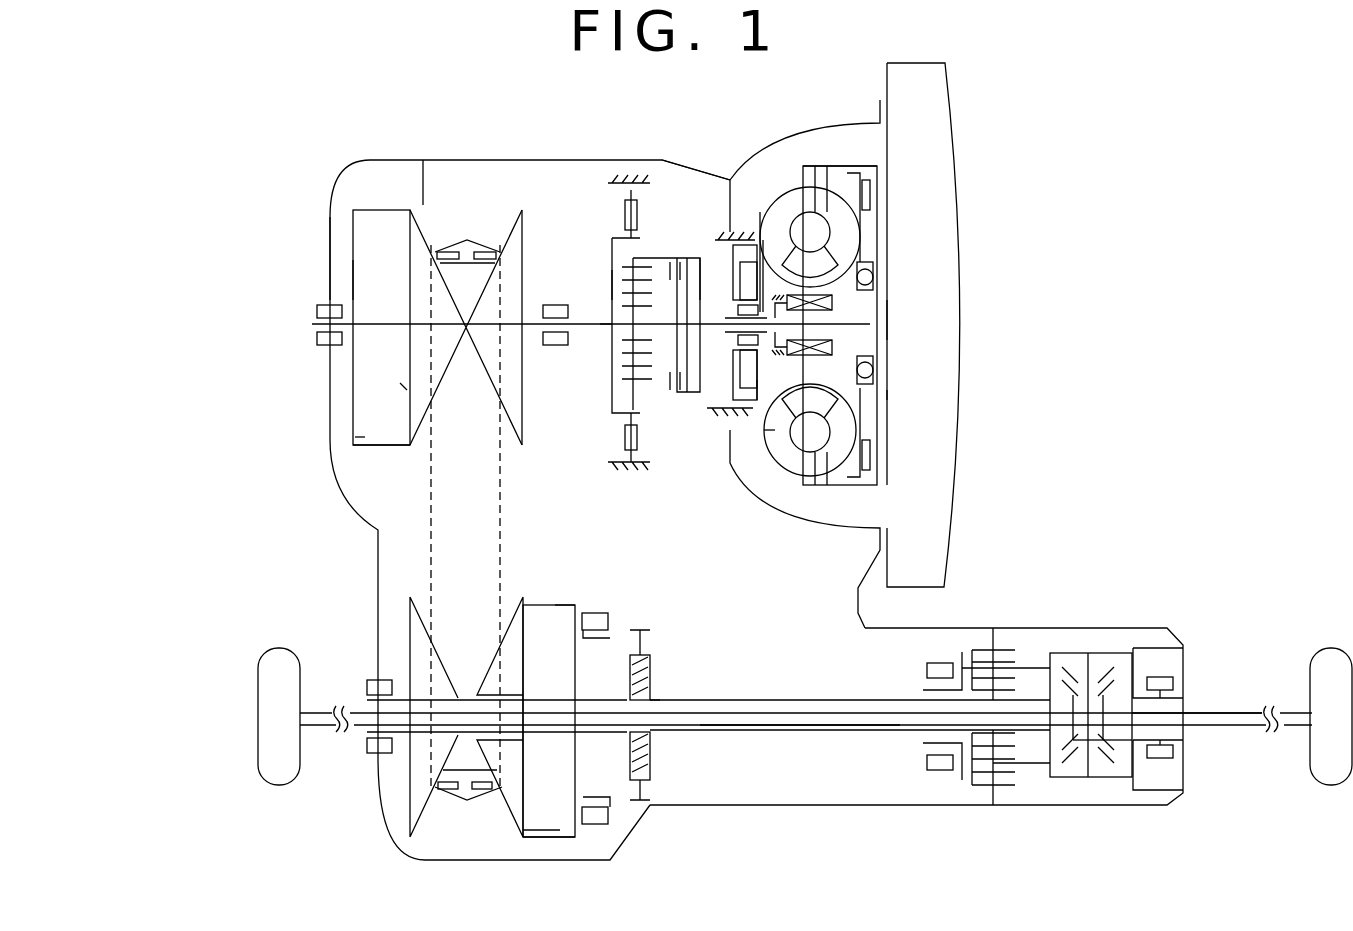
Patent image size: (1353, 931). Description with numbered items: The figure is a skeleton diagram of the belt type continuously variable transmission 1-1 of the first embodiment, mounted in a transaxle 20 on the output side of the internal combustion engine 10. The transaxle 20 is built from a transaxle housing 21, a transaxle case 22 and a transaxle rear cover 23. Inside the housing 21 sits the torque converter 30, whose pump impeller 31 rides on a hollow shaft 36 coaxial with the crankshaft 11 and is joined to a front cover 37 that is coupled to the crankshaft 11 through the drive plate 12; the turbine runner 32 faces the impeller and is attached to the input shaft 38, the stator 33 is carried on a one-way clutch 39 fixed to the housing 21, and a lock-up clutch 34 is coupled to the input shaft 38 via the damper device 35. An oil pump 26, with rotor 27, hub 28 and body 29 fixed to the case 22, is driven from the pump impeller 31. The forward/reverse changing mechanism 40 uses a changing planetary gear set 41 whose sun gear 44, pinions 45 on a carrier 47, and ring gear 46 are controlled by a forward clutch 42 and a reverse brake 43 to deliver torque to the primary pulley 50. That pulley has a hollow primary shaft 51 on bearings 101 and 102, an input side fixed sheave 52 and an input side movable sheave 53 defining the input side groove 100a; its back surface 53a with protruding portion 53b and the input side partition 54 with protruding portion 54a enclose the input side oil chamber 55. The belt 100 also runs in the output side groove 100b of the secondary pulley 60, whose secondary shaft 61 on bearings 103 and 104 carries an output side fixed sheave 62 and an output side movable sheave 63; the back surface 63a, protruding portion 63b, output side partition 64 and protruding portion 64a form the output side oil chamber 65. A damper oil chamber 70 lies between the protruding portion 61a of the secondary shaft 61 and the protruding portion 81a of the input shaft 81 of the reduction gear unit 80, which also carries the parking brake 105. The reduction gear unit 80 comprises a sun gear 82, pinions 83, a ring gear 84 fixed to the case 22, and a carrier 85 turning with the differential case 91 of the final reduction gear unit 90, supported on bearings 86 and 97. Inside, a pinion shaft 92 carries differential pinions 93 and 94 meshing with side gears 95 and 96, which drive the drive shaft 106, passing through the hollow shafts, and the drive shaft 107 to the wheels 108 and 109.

The internal combustion engine 10 is at (959, 86).
The crankshaft 11 is at (920, 322).
The drive plate 12 is at (880, 396).
The transaxle 20 is at (495, 137).
The transaxle housing 21 is at (812, 125).
The transaxle case 22 is at (680, 160).
The transaxle rear cover 23 is at (330, 230).
The oil pump 26 is at (741, 206).
The rotor 27 is at (726, 382).
The hub 28 is at (810, 226).
The body 29 is at (715, 432).
The torque converter 30 is at (831, 292).
The pump impeller 31 is at (772, 436).
The turbine runner 32 is at (838, 200).
The stator 33 is at (810, 434).
The lock-up clutch 34 is at (883, 452).
The damper device 35 is at (876, 247).
The hollow shaft 36 is at (745, 340).
The front cover 37 is at (855, 168).
The input shaft 38 is at (722, 310).
The one-way clutch 39 is at (845, 351).
The forward/reverse changing mechanism 40 is at (627, 342).
The changing planetary gear set 41 is at (598, 253).
The forward clutch 42 is at (702, 250).
The reverse brake 43 is at (640, 220).
The sun gear 44 is at (662, 382).
The pinions 45 is at (648, 290).
The ring gear 46 is at (612, 392).
The carrier 47 is at (612, 280).
The primary pulley 50 is at (393, 475).
The primary shaft 51 is at (583, 335).
The input side fixed sheave 52 is at (527, 240).
The input side movable sheave 53 is at (435, 368).
The back surface 53a is at (400, 388).
The protruding portion 53b is at (380, 447).
The input side partition 54 is at (353, 262).
The protruding portion 54a is at (355, 436).
The input side oil chamber 55 is at (372, 210).
The secondary pulley 60 is at (488, 718).
The secondary shaft 61 is at (470, 700).
The protruding portion 61a is at (632, 675).
The output side fixed sheave 62 is at (378, 628).
The output side movable sheave 63 is at (510, 633).
The back surface 63a is at (540, 603).
The protruding portion 63b is at (545, 838).
The output side partition 64 is at (598, 613).
The protruding portion 64a is at (530, 835).
The output side oil chamber 65 is at (560, 605).
The damper oil chamber 70 is at (655, 684).
The reduction gear unit 80 is at (871, 648).
The input shaft 81 is at (796, 700).
The protruding portion 81a is at (655, 668).
The sun gear 82 is at (1005, 690).
The pinions 83 is at (1012, 650).
The ring gear 84 is at (985, 648).
The carrier 85 is at (1025, 772).
The bearing 86 is at (936, 650).
The final reduction gear unit 90 is at (1125, 701).
The differential case 91 is at (1086, 653).
The pinion shaft 92 is at (1080, 660).
The differential pinion 93 is at (1120, 672).
The differential pinion 94 is at (1105, 765).
The side gear 95 is at (1066, 740).
The side gear 96 is at (1110, 742).
The bearing 97 is at (1160, 758).
The belt 100 is at (476, 250).
The input side groove 100a is at (460, 292).
The output side groove 100b is at (445, 757).
The bearing 101 is at (555, 345).
The bearing 102 is at (317, 312).
The bearing 103 is at (367, 745).
The bearing 104 is at (594, 824).
The parking brake 105 is at (640, 630).
The drive shaft 106 is at (838, 726).
The drive shaft 107 is at (1237, 713).
The wheel 108 is at (282, 648).
The wheel 109 is at (1330, 648).
The belt type continuously variable transmission 1-1 is at (520, 196).